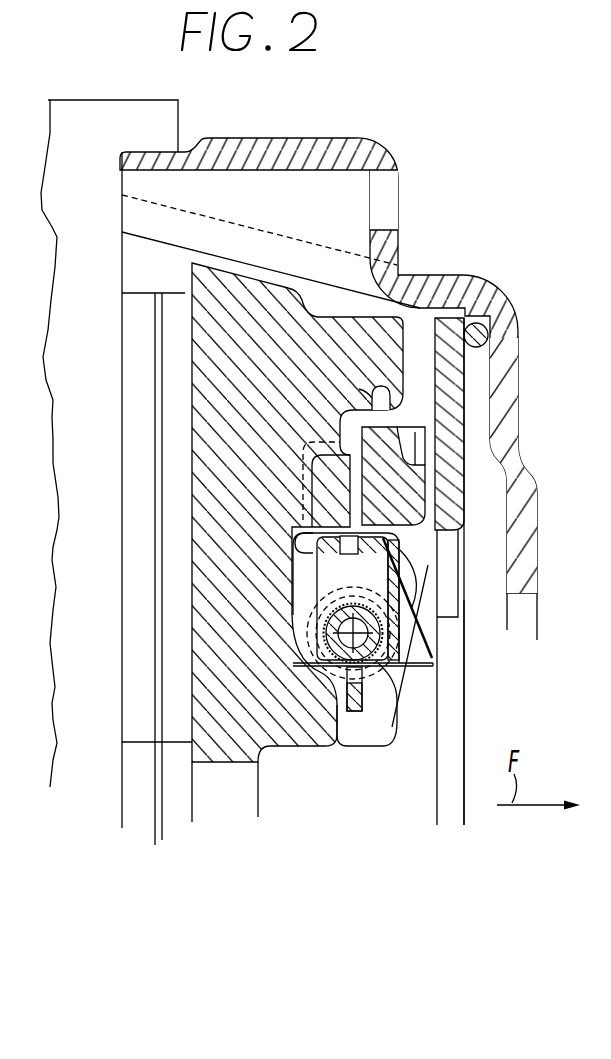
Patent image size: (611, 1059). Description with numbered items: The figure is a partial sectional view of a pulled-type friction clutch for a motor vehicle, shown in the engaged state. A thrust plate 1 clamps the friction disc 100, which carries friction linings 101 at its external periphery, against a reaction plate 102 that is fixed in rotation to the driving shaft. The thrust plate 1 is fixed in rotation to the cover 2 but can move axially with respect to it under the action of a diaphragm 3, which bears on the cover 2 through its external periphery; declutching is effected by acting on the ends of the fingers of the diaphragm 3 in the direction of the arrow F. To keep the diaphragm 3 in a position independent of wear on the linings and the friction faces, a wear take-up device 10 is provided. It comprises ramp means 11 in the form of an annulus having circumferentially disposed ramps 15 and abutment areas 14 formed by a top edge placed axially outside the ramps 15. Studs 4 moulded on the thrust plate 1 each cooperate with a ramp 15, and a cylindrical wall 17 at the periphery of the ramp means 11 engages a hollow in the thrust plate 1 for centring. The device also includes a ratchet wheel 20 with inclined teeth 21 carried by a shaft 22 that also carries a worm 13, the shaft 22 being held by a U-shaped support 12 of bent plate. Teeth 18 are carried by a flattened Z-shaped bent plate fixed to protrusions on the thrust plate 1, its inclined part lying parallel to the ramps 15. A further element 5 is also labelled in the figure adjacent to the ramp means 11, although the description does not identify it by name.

The thrust plate 1 is at (191, 540).
The cover 2 is at (402, 158).
The diaphragm 3 is at (465, 722).
The studs 4 is at (330, 468).
The spring 5 is at (414, 430).
The wear take-up device 10 is at (420, 423).
The ramp means 11 is at (437, 462).
The support 12 is at (407, 593).
The worm 13 is at (304, 620).
The abutment areas 14 is at (418, 498).
The ramps 15 is at (292, 535).
The cylindrical wall 17 is at (372, 386).
The teeth 18 is at (355, 718).
The ratchet wheel 20 is at (320, 645).
The inclined teeth 21 is at (350, 607).
The shaft 22 is at (407, 632).
The friction disc 100 is at (148, 802).
The friction linings 101 is at (143, 700).
The reaction plate 102 is at (83, 158).